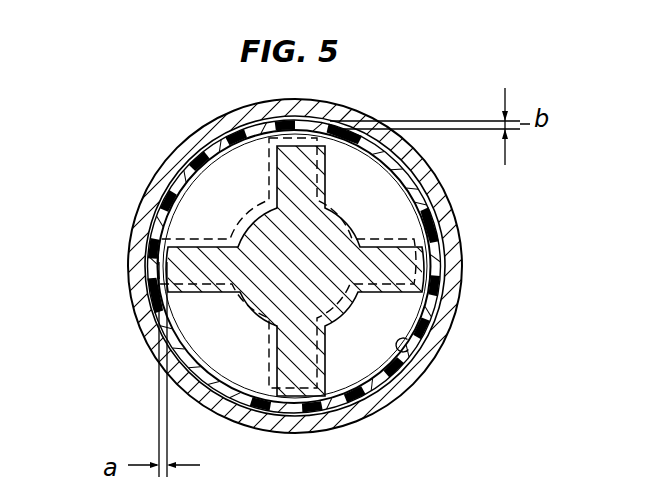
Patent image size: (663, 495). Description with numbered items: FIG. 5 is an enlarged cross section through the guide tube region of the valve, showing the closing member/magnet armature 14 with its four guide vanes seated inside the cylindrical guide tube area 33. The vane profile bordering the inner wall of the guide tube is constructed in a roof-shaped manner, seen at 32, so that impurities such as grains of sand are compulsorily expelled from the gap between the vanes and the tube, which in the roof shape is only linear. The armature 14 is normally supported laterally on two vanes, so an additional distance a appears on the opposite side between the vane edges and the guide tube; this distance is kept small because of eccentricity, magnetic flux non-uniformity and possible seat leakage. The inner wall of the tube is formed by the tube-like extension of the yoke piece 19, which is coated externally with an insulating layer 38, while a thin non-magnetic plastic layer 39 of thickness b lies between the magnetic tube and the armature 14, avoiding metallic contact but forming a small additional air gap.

The closing member/magnet armature 14 is at (325, 235).
The yoke piece 19 is at (294, 428).
The roof-shaped vane profile 32 is at (430, 292).
The guide tube area 33 is at (408, 353).
The insulating layer 38 is at (450, 262).
The non-magnetic layer 39 is at (420, 203).